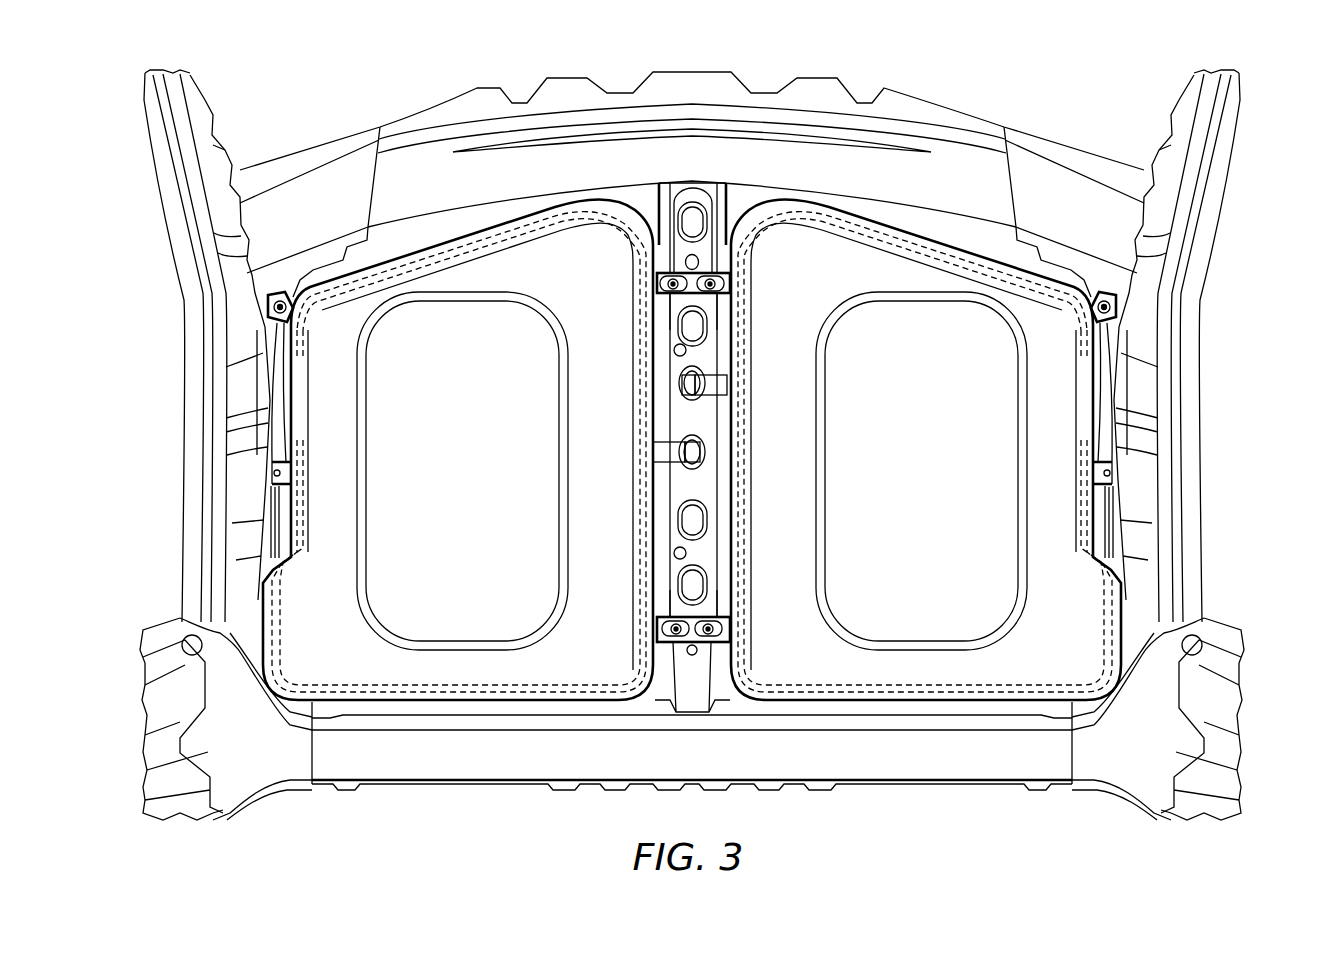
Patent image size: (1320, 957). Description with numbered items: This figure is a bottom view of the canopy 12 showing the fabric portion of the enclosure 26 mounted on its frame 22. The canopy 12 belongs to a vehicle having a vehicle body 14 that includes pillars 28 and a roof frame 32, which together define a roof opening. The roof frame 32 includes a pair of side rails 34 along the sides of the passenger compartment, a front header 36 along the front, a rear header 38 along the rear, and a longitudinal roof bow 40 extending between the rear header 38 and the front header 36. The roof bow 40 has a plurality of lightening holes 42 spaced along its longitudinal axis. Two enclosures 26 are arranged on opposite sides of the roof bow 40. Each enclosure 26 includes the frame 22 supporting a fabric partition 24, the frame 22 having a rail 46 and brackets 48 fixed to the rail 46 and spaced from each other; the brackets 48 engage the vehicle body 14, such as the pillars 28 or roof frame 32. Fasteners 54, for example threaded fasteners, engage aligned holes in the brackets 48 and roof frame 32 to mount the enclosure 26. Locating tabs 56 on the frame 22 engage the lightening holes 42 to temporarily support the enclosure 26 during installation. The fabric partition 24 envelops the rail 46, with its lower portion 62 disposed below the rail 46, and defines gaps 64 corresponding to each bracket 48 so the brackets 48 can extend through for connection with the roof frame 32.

The canopy 12 is at (1219, 458).
The vehicle body 14 is at (167, 832).
The frame 22 is at (385, 697).
The fabric partition 24 is at (553, 657).
The enclosure 26 is at (309, 710).
The pillars 28 is at (165, 140).
The roof frame 32 is at (165, 458).
The side rails 34 is at (188, 417).
The front header 36 is at (923, 147).
The rear header 38 is at (620, 765).
The longitudinal roof bow 40 is at (708, 418).
The lightening holes 42 is at (682, 383).
The rail 46 is at (475, 695).
The brackets 48 is at (262, 324).
The fasteners 54 is at (267, 307).
The locating tabs 56 is at (663, 453).
The lower portion 62 is at (692, 471).
The gaps 64 is at (250, 350).